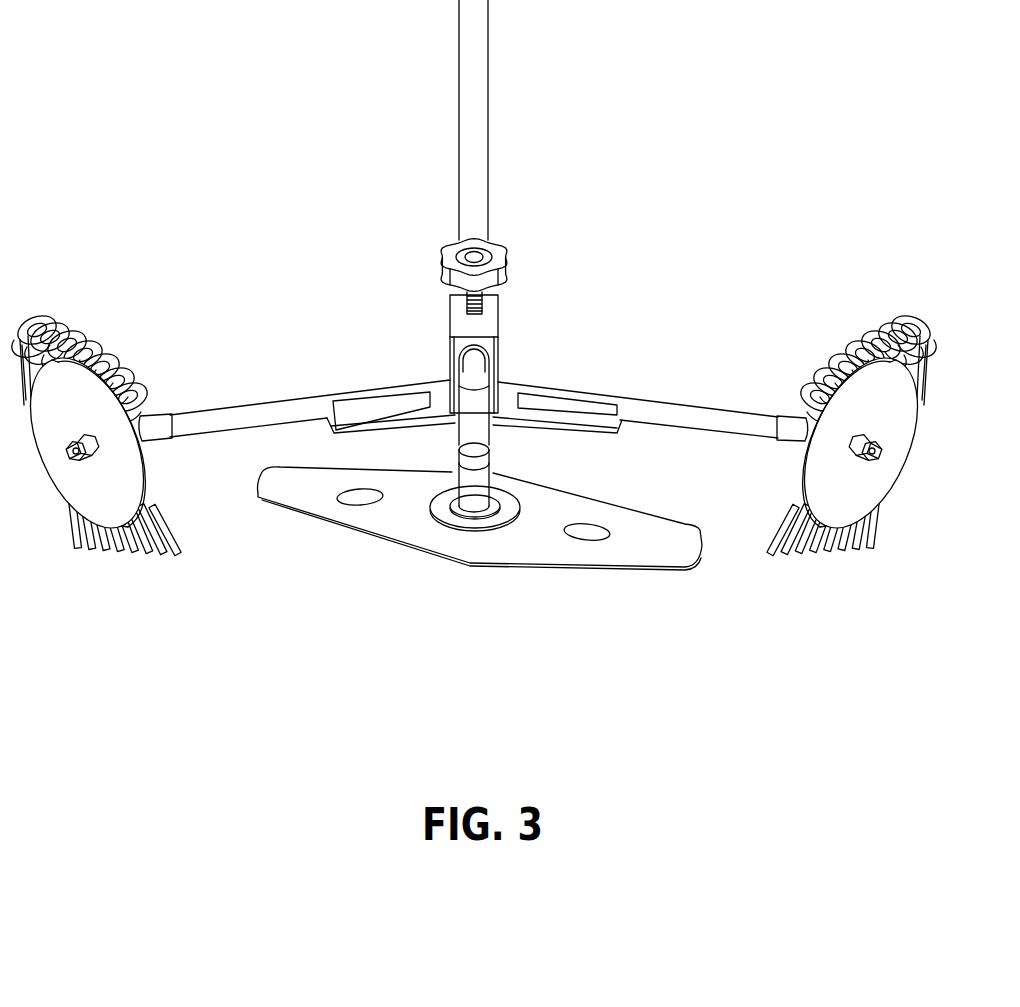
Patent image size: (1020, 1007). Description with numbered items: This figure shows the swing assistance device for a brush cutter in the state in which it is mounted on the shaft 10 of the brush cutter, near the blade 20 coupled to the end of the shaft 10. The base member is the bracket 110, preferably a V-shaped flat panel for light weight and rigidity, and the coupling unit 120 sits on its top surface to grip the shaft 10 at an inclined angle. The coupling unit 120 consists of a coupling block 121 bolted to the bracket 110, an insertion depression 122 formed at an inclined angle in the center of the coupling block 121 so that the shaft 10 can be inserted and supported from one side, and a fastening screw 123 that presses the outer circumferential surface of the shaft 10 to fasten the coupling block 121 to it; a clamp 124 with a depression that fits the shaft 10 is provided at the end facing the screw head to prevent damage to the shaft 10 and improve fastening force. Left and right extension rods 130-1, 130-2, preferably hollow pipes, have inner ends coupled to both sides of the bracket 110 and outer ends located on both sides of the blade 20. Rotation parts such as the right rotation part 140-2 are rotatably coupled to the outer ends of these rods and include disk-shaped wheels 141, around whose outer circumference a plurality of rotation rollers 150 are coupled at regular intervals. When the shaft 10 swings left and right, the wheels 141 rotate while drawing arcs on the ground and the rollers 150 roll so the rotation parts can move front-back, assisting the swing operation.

The shaft 10 is at (477, 32).
The blade 20 is at (627, 552).
The bracket 110 is at (510, 387).
The coupling unit 120 is at (559, 294).
The coupling block 121 is at (493, 328).
The insertion depression 122 is at (493, 365).
The fastening screw 123 is at (497, 243).
The clamp 124 is at (457, 352).
The left extension rod 130-1 is at (687, 412).
The right extension rod 130-2 is at (264, 413).
The right rotation part 140-2 is at (474, 383).
The disk-shaped wheel 141 is at (120, 472).
The rotation roller 150 is at (148, 408).